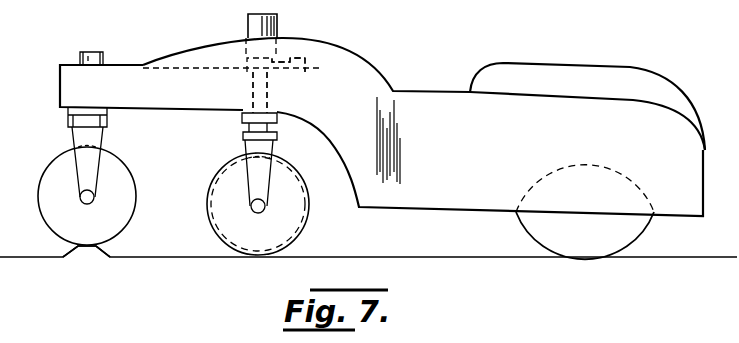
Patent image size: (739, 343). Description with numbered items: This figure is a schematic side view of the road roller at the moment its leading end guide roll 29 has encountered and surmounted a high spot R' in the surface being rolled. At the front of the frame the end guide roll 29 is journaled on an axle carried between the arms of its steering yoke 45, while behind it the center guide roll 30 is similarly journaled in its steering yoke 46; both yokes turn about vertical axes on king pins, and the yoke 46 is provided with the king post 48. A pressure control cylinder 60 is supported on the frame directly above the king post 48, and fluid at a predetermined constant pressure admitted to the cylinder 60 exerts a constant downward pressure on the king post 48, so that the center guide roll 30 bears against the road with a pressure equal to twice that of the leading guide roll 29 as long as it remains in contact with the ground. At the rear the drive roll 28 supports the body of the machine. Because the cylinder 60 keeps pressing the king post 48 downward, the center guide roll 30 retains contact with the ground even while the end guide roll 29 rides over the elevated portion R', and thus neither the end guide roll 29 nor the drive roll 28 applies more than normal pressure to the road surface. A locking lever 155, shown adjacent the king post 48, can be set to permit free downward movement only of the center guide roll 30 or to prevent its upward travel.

The drive roll 28 is at (635, 228).
The end guide roll 29 is at (125, 178).
The center guide roll 30 is at (300, 207).
The steering yoke 45 is at (82, 162).
The steering yoke 46 is at (273, 154).
The king post 48 is at (267, 87).
The cylinder 60 is at (248, 32).
The locking lever 155 is at (293, 60).
The high spot R' is at (104, 243).